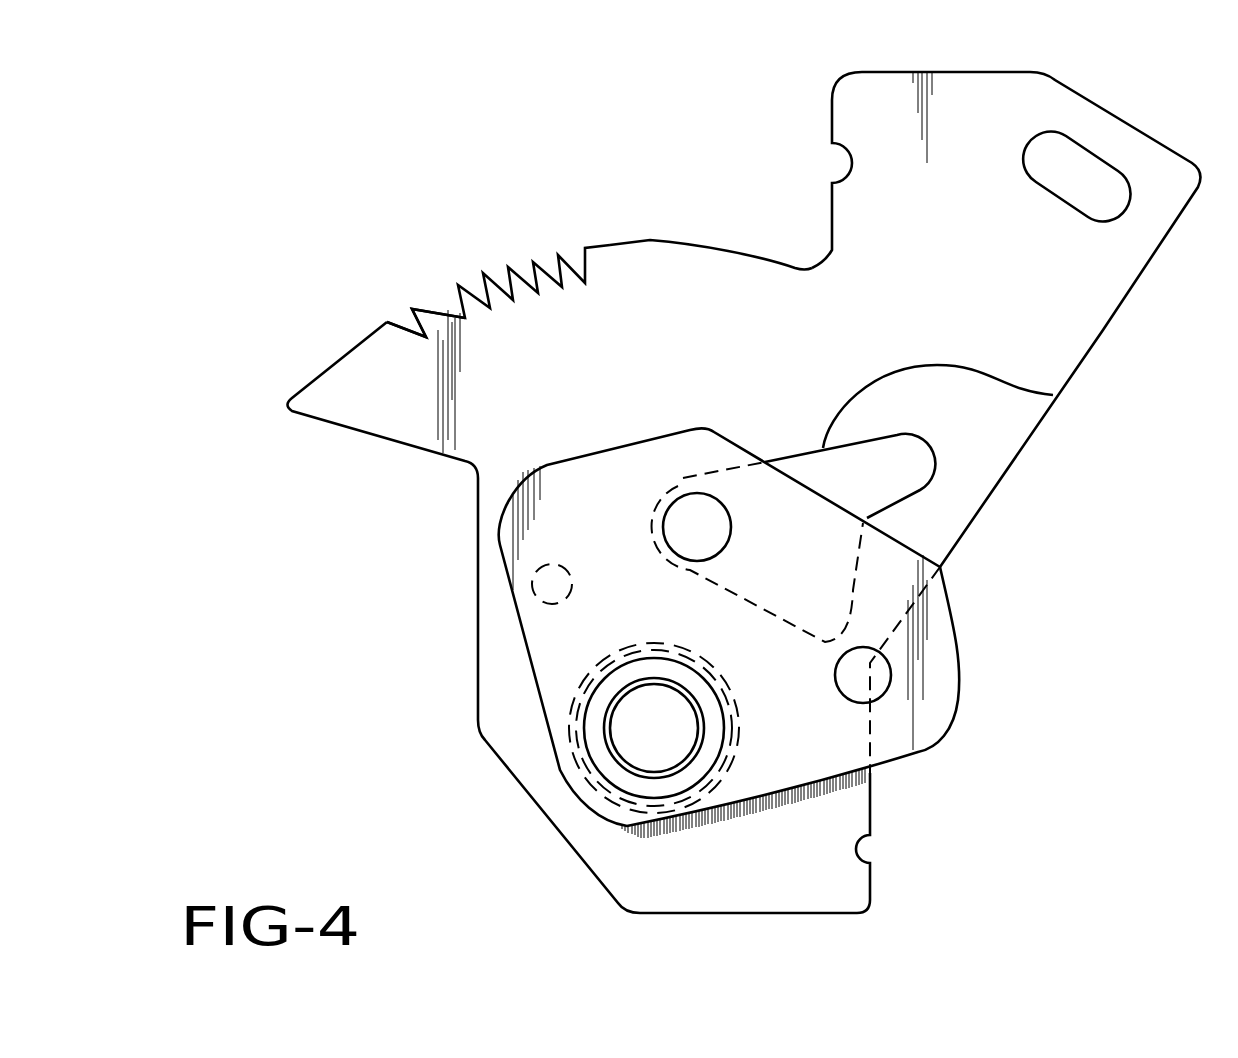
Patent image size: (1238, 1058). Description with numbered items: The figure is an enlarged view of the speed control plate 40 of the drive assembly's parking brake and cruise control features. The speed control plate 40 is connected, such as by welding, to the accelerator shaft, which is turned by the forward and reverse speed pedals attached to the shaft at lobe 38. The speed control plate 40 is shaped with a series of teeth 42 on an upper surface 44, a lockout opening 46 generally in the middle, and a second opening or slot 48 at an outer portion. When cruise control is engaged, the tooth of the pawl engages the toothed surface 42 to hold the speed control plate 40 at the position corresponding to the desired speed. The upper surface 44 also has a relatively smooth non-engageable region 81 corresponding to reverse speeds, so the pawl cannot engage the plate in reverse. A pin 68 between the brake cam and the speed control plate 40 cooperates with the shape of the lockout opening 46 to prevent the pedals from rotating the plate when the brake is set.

The lobe 38 is at (957, 720).
The speed control plate 40 is at (1030, 437).
The teeth 42 is at (445, 300).
The upper surface 44 is at (610, 243).
The lockout opening 46 is at (1053, 395).
The slot 48 is at (1085, 142).
The pin 68 is at (722, 500).
The non-engageable region 81 is at (703, 245).